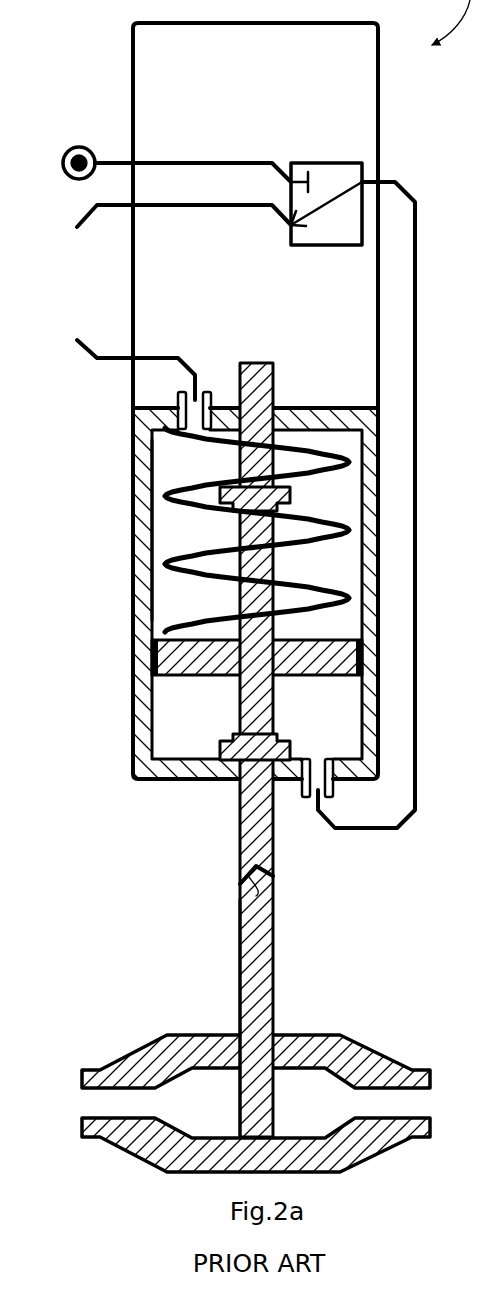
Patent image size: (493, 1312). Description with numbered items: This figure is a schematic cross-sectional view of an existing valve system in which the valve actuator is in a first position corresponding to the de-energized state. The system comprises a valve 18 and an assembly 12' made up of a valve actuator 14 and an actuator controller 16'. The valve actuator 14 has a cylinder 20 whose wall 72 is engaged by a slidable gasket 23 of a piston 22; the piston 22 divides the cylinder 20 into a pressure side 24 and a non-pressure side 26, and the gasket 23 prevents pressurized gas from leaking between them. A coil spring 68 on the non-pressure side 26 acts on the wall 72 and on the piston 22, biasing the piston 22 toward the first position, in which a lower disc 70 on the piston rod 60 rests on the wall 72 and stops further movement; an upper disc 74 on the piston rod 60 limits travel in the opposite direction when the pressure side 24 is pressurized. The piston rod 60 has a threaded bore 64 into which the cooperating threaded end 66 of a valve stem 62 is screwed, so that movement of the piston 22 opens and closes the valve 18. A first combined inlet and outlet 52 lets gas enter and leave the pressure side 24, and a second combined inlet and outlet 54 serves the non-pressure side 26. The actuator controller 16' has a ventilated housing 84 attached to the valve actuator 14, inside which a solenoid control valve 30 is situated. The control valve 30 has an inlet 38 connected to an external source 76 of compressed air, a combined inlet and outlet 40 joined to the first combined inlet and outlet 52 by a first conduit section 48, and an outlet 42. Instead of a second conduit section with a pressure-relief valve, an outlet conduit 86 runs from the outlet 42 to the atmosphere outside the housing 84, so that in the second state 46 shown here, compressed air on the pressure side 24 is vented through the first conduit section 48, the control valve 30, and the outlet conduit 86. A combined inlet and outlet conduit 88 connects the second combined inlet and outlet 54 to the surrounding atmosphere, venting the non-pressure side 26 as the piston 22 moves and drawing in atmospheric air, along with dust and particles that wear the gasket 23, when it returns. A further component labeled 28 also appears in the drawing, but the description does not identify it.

The assembly 12' is at (81, 385).
The valve actuator 14 is at (126, 755).
The actuator controller 16' is at (203, 215).
The valve 18 is at (128, 1048).
The cylinder 20 is at (133, 727).
The piston 22 is at (157, 660).
The slidable gasket 23 is at (153, 641).
The pressure side 24 is at (173, 693).
The non-pressure side 26 is at (173, 608).
The electrical line 28 is at (420, 418).
The control valve 30 is at (333, 160).
The inlet 38 is at (293, 185).
The combined inlet and outlet 40 is at (363, 182).
The outlet 42 is at (295, 235).
The second state 46 is at (311, 163).
The first conduit section 48 is at (417, 297).
The first combined inlet and outlet 52 is at (320, 780).
The second combined inlet and outlet 54 is at (193, 428).
The piston rod 60 is at (240, 822).
The valve stem 62 is at (240, 920).
The threaded bore 64 is at (240, 857).
The threaded end 66 is at (252, 890).
The coil spring 68 is at (167, 563).
The lower disc 70 is at (292, 752).
The wall 72 is at (153, 492).
The upper disc 74 is at (292, 497).
The external source of compressed air 76 is at (86, 147).
The housing 84 is at (133, 93).
The outlet conduit 86 is at (86, 216).
The combined inlet and outlet conduit 88 is at (84, 350).